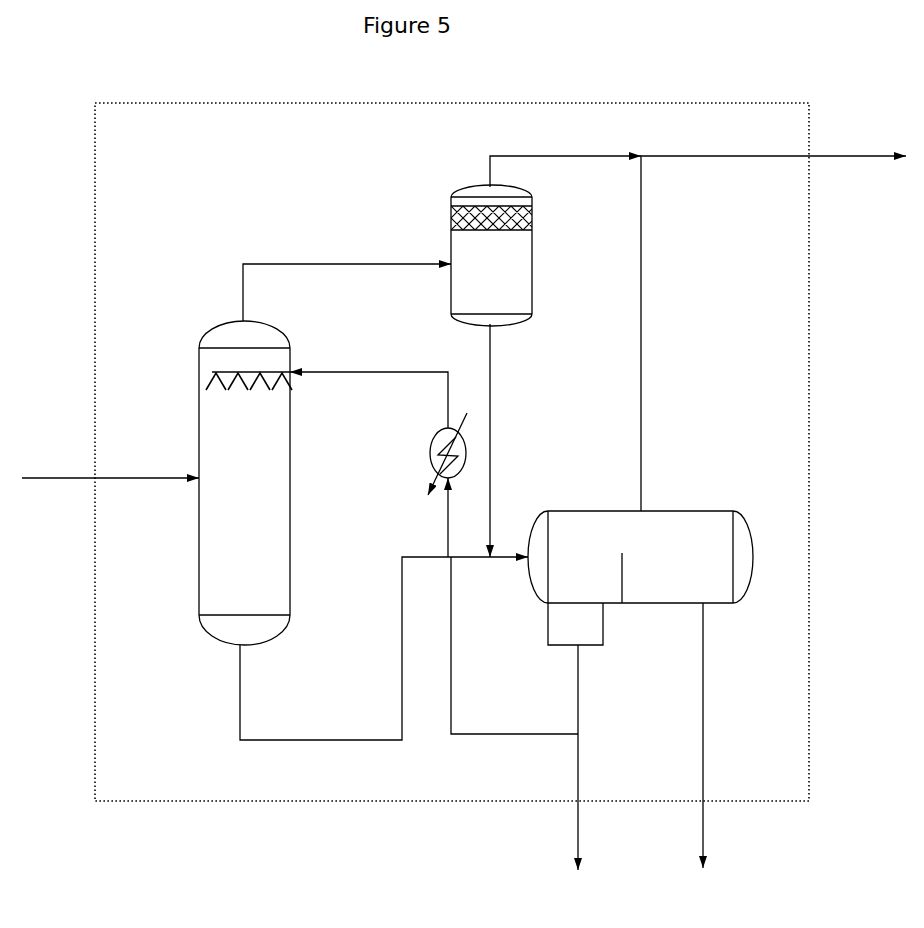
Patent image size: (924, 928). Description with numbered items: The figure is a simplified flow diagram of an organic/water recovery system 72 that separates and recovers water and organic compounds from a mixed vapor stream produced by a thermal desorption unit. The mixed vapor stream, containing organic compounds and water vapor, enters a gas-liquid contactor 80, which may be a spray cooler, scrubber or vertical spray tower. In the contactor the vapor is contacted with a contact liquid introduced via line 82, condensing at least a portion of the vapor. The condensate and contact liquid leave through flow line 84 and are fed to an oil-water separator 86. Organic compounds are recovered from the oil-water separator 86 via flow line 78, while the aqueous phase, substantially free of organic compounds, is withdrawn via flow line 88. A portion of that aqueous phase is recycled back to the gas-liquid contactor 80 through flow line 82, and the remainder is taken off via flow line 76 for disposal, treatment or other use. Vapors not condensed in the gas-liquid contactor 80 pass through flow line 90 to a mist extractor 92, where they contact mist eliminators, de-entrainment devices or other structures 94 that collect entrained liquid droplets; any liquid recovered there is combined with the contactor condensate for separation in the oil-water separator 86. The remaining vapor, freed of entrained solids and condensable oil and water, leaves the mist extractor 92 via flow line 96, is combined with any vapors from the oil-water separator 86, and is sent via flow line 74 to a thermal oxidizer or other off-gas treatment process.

The recovery system 72 is at (95, 222).
The gas-liquid contactor 80 is at (245, 483).
The flow line 90 is at (318, 266).
The mist extractor 92 is at (491, 371).
The mist eliminators 94 is at (451, 213).
The flow line 96 is at (490, 170).
The flow line 74 is at (862, 165).
The flow line 82 is at (337, 380).
The flow line 84 is at (331, 736).
The oil-water separator 86 is at (712, 511).
The flow line 88 is at (578, 693).
The flow line 76 is at (578, 840).
The flow line 78 is at (703, 840).